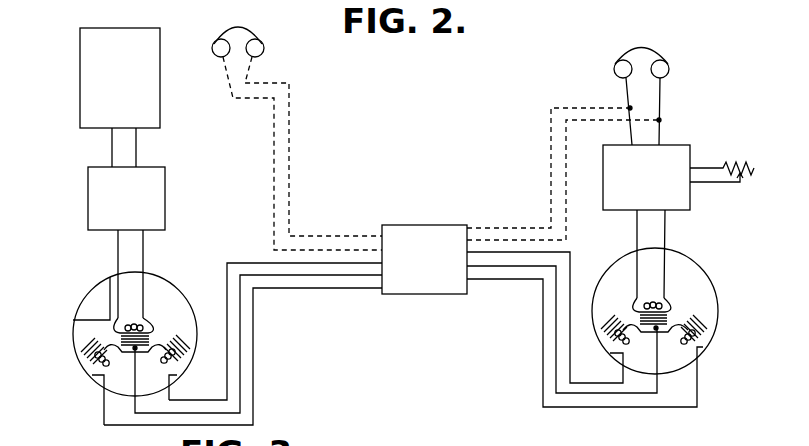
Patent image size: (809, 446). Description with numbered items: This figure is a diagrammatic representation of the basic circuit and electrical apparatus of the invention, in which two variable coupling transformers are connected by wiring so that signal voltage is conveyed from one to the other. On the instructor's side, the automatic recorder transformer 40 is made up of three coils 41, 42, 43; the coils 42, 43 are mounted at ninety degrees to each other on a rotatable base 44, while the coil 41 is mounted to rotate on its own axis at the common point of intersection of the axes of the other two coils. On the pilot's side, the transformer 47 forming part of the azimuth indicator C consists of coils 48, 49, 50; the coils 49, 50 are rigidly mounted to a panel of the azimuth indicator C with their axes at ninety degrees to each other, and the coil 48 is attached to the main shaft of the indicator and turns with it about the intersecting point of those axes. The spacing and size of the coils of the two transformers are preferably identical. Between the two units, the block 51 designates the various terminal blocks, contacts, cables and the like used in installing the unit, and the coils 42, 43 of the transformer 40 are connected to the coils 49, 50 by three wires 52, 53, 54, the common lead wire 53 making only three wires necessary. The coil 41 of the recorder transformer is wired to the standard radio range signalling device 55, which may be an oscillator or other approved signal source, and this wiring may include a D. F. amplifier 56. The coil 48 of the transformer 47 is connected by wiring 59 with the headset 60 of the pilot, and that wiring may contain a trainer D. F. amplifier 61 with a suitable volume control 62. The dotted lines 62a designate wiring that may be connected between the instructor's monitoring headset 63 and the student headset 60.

The automatic recorder transformer 40 is at (158, 342).
The coil 41 is at (130, 328).
The coil 42 is at (86, 320).
The coil 43 is at (186, 345).
The rotatable base 44 is at (98, 378).
The transformer 47 is at (676, 294).
The coil 48 is at (640, 306).
The coil 49 is at (704, 328).
The coil 50 is at (612, 343).
The terminal blocks, contacts and cables 51 is at (418, 284).
The wire 52 is at (569, 288).
The common lead wire 53 is at (556, 316).
The wire 54 is at (545, 337).
The radio range signalling device 55 is at (81, 90).
The D. F. amplifier 56 is at (167, 208).
The wiring 59 is at (662, 130).
The headset 60 is at (657, 57).
The trainer D. F. amplifier 61 is at (673, 162).
The volume control 62 is at (745, 174).
The wiring 62a is at (289, 137).
The monitoring headset 63 is at (265, 56).
The azimuth indicator C is at (710, 293).